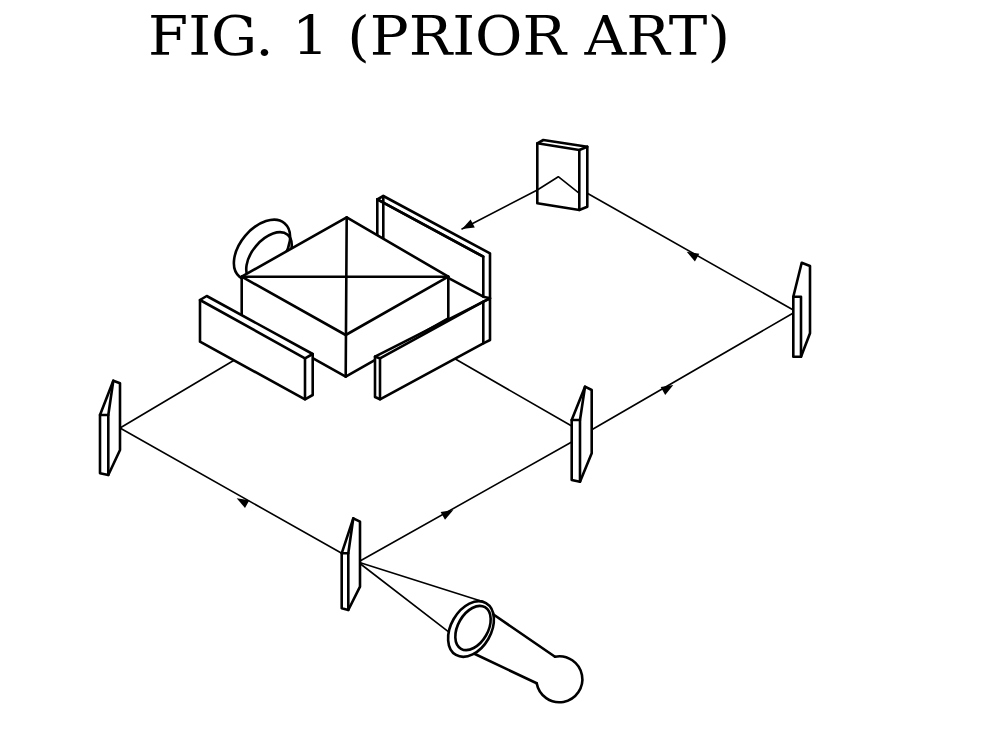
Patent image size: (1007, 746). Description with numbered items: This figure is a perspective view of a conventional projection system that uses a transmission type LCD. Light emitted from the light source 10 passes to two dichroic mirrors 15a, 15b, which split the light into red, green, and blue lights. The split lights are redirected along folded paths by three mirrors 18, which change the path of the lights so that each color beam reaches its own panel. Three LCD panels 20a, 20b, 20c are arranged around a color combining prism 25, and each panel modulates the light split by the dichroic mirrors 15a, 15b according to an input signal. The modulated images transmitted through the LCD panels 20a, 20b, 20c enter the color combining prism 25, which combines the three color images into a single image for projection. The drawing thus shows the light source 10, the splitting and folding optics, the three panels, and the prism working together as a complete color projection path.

The light source 10 is at (567, 673).
The dichroic mirror 15a is at (340, 582).
The dichroic mirror 15b is at (587, 450).
The mirror 18 is at (98, 427).
The LCD panel 20a is at (205, 290).
The LCD panel 20b is at (493, 327).
The LCD panel 20c is at (401, 202).
The color combining prism 25 is at (334, 239).